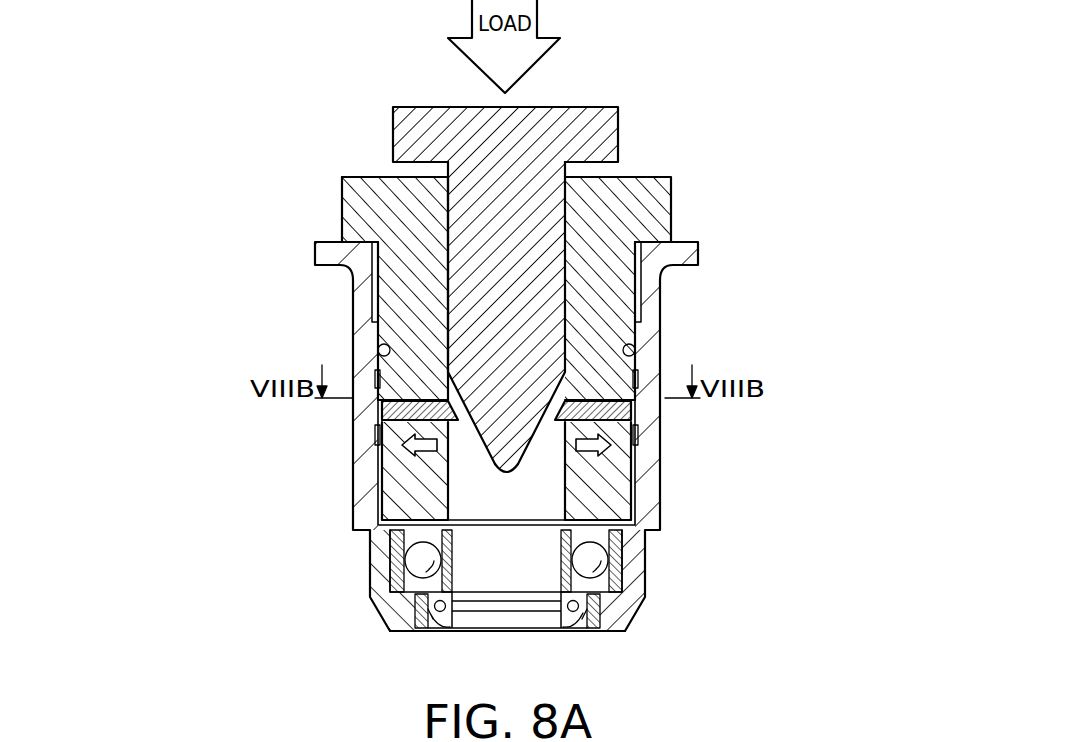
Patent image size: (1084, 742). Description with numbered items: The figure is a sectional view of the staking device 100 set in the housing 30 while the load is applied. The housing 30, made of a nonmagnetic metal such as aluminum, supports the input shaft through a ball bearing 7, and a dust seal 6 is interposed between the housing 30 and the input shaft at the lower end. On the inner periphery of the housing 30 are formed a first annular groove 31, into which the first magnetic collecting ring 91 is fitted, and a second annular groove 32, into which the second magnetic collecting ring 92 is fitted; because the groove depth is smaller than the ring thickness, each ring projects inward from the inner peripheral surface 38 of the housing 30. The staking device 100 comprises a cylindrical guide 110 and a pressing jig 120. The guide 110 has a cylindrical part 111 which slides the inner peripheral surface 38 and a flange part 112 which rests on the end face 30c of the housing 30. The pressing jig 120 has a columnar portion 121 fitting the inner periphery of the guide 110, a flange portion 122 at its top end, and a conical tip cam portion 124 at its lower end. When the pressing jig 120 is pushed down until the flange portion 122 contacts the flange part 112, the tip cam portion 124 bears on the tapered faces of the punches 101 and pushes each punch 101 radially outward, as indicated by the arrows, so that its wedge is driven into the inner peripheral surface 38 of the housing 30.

The dust seal 6 is at (388, 628).
The ball bearing 7 is at (392, 573).
The housing 30 is at (512, 423).
The end face 30c is at (692, 242).
The first annular groove 31 is at (378, 437).
The second annular groove 32 is at (376, 360).
The inner peripheral surface 38 is at (381, 345).
The first magnetic collecting ring 91 is at (640, 440).
The second magnetic collecting ring 92 is at (660, 366).
The staking device 100 is at (705, 175).
The punch 101 is at (383, 410).
The cylindrical guide 110 is at (435, 333).
The cylindrical part 111 is at (383, 280).
The flange part 112 is at (352, 213).
The pressing jig 120 is at (494, 302).
The columnar portion 121 is at (554, 296).
The flange portion 122 is at (618, 118).
The tip cam portion 124 is at (516, 458).